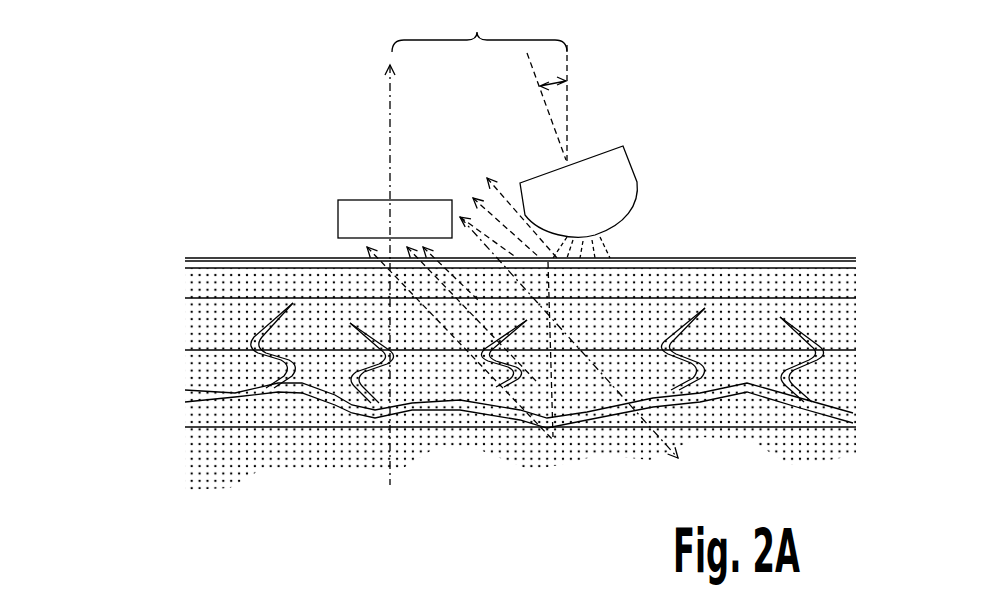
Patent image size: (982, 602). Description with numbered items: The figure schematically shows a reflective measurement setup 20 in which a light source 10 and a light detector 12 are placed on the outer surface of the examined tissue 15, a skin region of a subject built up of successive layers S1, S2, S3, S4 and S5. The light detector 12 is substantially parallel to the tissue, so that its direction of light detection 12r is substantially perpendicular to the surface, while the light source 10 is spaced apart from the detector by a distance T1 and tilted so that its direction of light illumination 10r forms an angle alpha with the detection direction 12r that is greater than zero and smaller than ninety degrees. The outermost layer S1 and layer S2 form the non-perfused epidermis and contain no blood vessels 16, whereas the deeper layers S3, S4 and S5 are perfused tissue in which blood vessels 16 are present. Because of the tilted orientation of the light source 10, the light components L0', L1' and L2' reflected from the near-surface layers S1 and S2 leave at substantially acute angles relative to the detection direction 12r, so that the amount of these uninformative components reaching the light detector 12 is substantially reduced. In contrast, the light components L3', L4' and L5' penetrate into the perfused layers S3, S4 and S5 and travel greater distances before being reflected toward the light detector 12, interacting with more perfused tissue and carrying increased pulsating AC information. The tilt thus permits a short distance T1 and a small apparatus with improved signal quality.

The light source 10 is at (637, 182).
The direction of light illumination 10r is at (568, 80).
The light detector 12 is at (370, 200).
The direction of light detection 12r is at (390, 120).
The examined tissue 15 is at (222, 258).
The blood vessels 16 is at (275, 390).
The reflective measurement setup 20 is at (664, 117).
The outermost skin layer S1 is at (163, 265).
The skin layer S2 is at (163, 290).
The perfused tissue layer S3 is at (163, 332).
The perfused tissue layer S4 is at (165, 393).
The perfused tissue layer S5 is at (152, 470).
The distance T1 is at (479, 26).
The light component L0' is at (522, 184).
The light component L1' is at (501, 194).
The light component L2' is at (549, 306).
The light component L3' is at (580, 257).
The light component L4' is at (472, 364).
The light component L5' is at (482, 377).